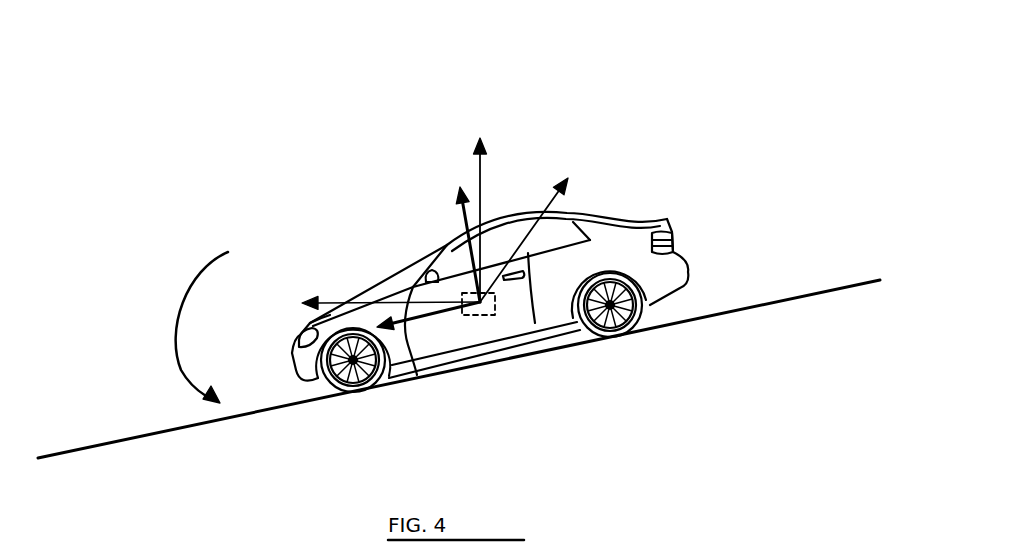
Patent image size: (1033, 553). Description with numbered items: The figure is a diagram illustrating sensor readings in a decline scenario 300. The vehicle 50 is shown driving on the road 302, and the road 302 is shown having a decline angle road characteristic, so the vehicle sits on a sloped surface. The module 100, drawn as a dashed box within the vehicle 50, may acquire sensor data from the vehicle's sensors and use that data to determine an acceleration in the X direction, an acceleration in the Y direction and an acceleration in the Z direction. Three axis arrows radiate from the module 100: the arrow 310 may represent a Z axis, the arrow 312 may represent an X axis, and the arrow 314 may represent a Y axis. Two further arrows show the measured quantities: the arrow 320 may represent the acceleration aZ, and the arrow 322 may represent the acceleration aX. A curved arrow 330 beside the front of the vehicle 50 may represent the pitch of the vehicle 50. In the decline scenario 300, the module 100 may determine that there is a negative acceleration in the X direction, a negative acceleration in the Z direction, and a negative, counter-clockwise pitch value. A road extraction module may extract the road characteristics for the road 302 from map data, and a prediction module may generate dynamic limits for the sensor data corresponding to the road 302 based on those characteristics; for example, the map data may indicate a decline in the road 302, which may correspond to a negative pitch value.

The decline scenario 300 is at (224, 56).
The road 302 is at (155, 432).
The vehicle 50 is at (680, 218).
The module 100 is at (480, 313).
The arrow 310 is at (480, 165).
The arrow 312 is at (330, 300).
The arrow 314 is at (548, 200).
The arrow 320 is at (462, 226).
The arrow 322 is at (404, 335).
The curved arrow 330 is at (190, 284).